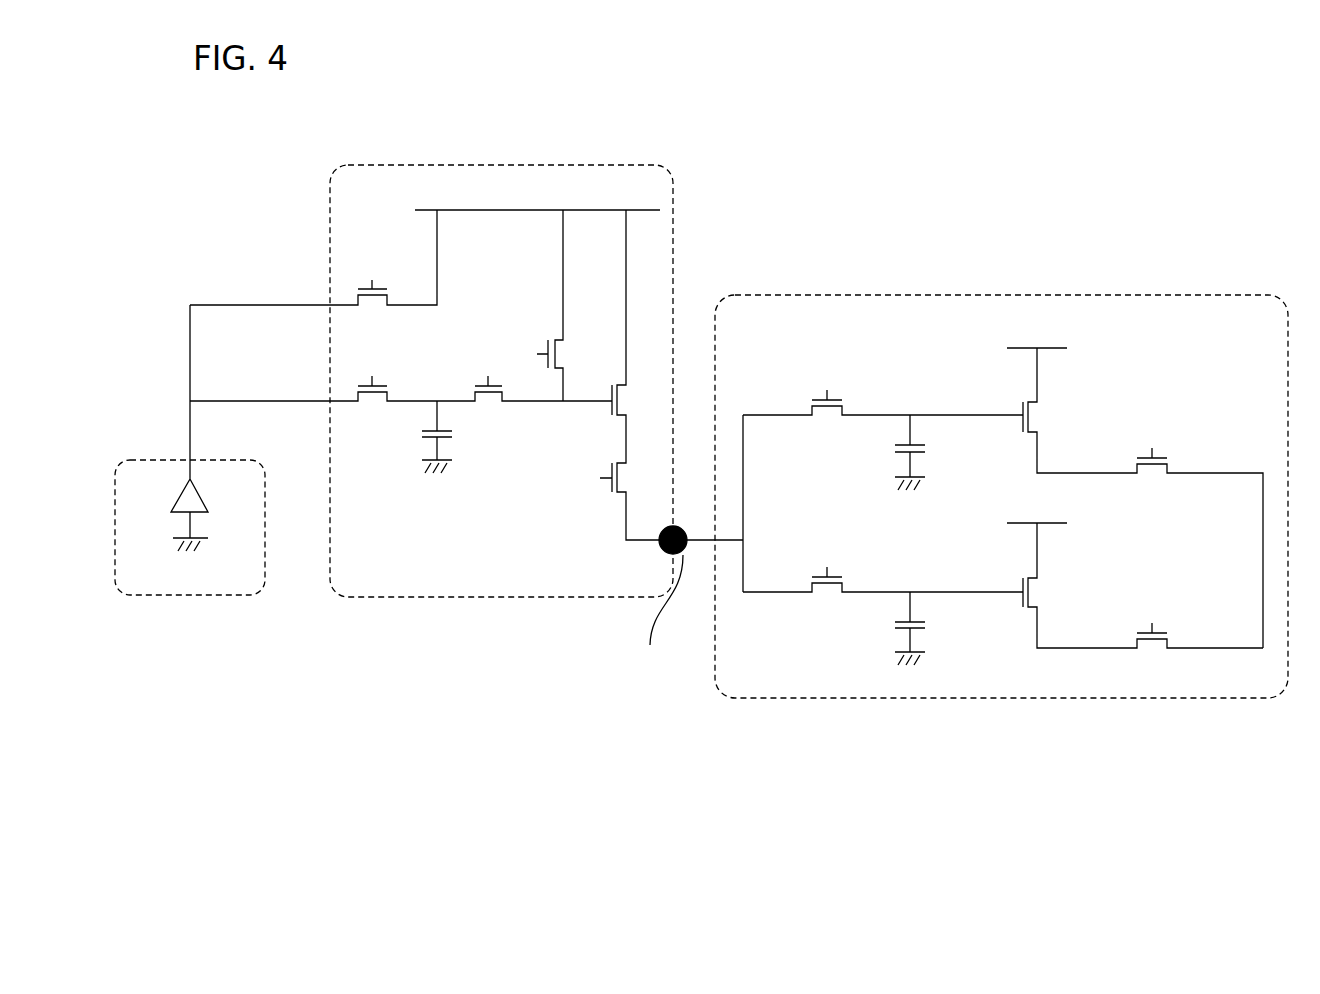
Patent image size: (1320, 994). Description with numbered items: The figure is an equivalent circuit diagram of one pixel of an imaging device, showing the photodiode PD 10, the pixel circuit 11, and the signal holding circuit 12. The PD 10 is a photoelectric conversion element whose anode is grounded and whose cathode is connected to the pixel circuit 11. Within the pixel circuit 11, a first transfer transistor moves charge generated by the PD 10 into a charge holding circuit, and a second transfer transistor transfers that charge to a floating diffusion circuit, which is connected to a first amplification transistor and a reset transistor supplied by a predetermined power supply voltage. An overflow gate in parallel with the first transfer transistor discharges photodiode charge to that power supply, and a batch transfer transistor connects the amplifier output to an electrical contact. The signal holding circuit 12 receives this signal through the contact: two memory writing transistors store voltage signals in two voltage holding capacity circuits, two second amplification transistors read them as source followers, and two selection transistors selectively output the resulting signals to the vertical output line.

The PD 10 is at (172, 597).
The pixel circuit 11 is at (417, 597).
The signal holding circuit 12 is at (873, 295).